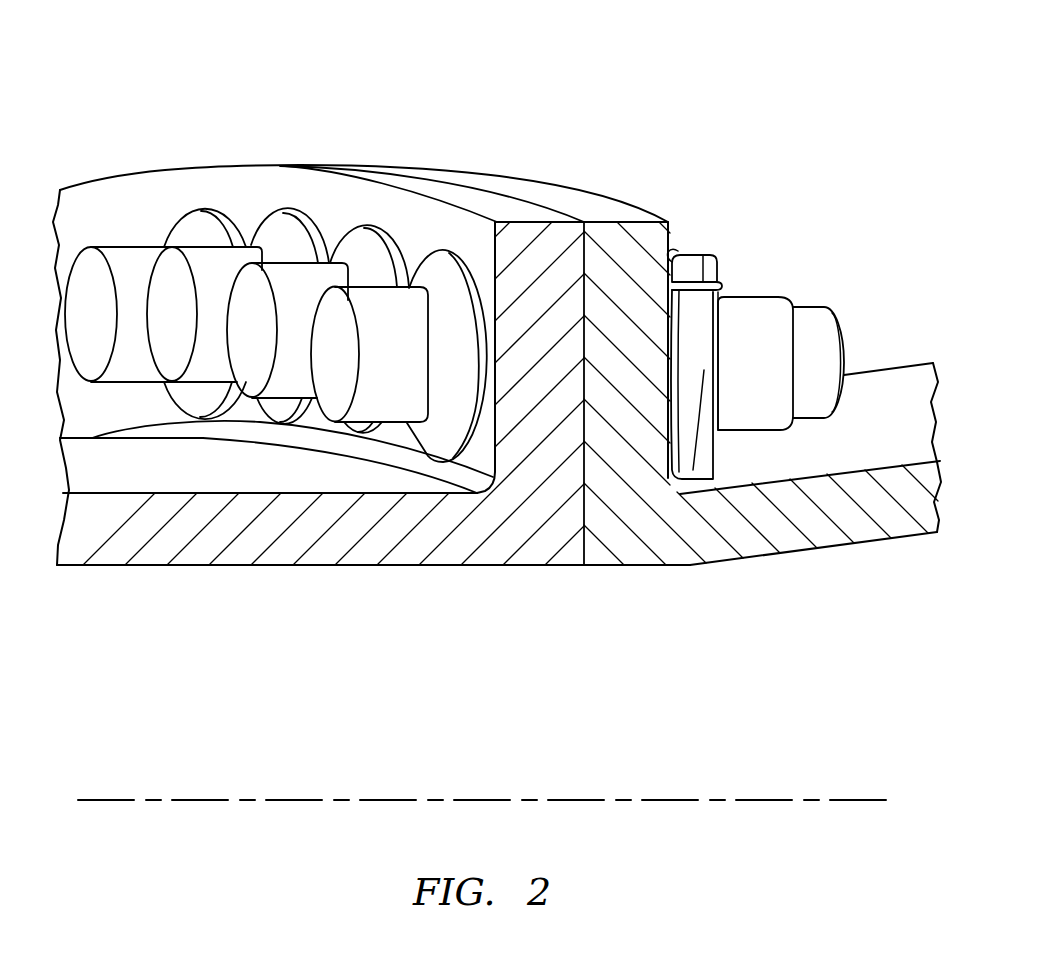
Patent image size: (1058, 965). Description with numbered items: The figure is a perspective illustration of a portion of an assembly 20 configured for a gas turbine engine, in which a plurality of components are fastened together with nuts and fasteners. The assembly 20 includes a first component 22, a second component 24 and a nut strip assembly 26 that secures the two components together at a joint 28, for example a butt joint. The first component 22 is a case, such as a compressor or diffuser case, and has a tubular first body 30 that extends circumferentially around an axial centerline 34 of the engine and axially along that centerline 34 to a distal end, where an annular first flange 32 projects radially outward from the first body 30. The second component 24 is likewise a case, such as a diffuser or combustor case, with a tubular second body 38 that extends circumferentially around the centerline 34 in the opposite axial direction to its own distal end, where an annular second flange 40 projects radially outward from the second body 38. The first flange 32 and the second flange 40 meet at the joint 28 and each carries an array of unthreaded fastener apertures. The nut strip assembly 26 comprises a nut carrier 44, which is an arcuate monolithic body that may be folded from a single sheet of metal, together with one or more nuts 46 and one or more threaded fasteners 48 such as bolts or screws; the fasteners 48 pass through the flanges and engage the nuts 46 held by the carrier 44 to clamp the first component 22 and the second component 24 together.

The assembly 20 is at (688, 90).
The first component 22 is at (203, 580).
The second component 24 is at (843, 557).
The nut strip assembly 26 is at (752, 238).
The joint 28 is at (585, 590).
The first body 30 is at (358, 567).
The first flange 32 is at (535, 222).
The axial centerline 34 is at (886, 800).
The second body 38 is at (770, 556).
The second flange 40 is at (628, 222).
The nut carrier 44 is at (697, 244).
The nut 46 is at (774, 290).
The threaded fastener 48 is at (121, 236).